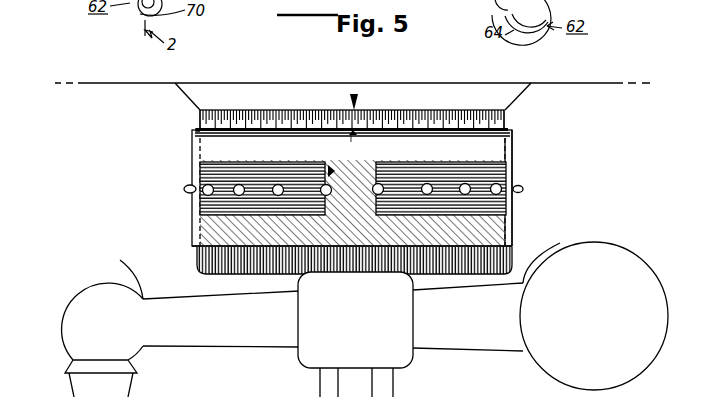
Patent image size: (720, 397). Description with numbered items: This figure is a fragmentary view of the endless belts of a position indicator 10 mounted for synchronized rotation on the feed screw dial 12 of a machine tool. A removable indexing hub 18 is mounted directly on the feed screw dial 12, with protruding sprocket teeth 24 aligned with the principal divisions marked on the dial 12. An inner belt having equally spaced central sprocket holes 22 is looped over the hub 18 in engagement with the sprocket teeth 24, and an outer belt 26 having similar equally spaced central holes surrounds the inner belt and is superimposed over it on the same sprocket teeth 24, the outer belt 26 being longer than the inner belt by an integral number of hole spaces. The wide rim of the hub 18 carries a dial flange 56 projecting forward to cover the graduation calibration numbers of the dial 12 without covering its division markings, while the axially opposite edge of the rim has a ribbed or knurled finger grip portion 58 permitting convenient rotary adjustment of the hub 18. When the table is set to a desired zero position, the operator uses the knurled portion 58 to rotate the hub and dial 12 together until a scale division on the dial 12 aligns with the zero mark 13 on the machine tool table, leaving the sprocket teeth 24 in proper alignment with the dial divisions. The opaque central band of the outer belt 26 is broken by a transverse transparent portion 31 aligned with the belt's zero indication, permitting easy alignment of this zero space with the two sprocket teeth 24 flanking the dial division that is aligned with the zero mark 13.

The indicator 10 is at (127, 220).
The feed screw dial 12 is at (296, 116).
The zero mark 13 is at (358, 104).
The indexing hub 18 is at (244, 286).
The sprocket holes 22 is at (516, 205).
The sprocket teeth 24 is at (199, 192).
The outer belt 26 is at (512, 156).
The transverse transparent portion 31 is at (363, 163).
The dial flange 56 is at (200, 131).
The knurled finger grip portion 58 is at (390, 258).